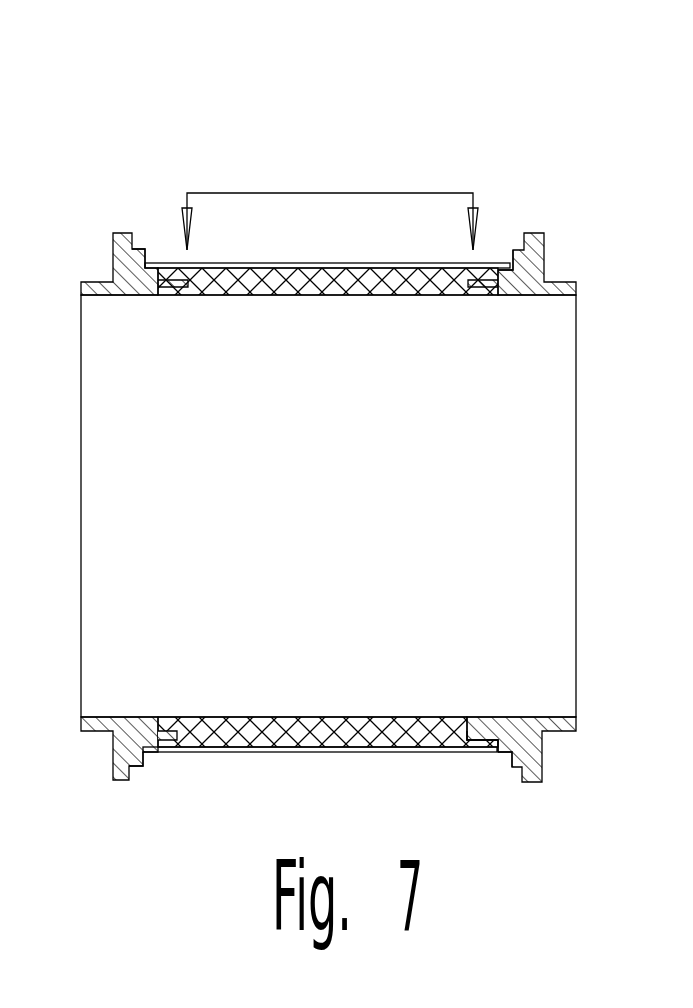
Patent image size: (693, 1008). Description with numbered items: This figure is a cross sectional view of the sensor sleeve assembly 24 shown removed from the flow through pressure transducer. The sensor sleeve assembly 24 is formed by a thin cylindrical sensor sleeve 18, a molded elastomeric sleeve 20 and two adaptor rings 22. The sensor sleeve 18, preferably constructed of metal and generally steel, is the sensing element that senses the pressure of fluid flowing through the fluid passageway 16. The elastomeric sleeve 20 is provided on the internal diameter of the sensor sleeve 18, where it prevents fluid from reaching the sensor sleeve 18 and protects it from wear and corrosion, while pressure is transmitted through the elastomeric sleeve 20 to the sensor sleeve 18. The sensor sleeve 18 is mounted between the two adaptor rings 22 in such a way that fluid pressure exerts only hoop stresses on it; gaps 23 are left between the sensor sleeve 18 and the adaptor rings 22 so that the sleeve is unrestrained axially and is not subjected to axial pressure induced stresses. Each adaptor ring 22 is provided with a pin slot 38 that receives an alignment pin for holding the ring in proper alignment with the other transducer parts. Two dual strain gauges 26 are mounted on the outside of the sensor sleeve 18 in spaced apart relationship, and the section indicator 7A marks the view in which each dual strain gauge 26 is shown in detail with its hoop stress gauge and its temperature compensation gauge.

The fluid passageway 16 is at (362, 718).
The cylindrical sensor sleeve 18 is at (477, 755).
The molded elastomeric sleeve 20 is at (223, 728).
The adaptor ring 22 is at (112, 733).
The gap 23 is at (147, 263).
The sensor sleeve assembly 24 is at (352, 479).
The dual strain gauge 26 is at (280, 262).
The pin slot 38 is at (132, 249).
The section 7A is at (330, 179).